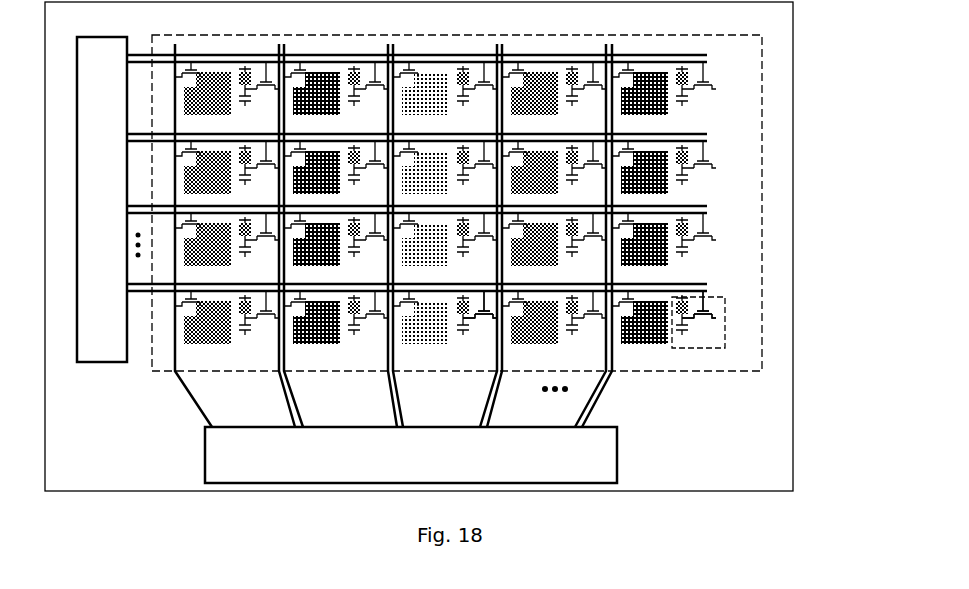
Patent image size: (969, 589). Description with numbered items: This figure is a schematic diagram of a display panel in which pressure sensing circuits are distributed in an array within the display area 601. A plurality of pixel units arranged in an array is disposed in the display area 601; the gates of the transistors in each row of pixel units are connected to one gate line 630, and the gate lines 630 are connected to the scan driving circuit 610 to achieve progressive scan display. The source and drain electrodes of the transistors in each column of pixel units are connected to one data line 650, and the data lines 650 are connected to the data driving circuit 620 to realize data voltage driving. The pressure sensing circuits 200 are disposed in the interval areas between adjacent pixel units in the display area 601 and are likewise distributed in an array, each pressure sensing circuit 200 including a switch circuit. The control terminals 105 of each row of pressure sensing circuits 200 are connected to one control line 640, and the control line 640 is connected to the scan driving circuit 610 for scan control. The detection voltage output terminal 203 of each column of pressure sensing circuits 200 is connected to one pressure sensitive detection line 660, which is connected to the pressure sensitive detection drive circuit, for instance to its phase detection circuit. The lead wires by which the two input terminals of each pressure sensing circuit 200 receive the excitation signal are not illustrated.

The scan driving circuit 610 is at (102, 199).
The data driving circuit 620 is at (411, 455).
The display area 601 is at (762, 83).
The gate line 630 is at (710, 138).
The control line 640 is at (708, 205).
The data line 650 is at (207, 407).
The pressure sensitive detection line 660 is at (487, 402).
The control terminal 105 is at (707, 296).
The pressure sensing circuit 200 is at (727, 306).
The detection voltage output terminal 203 is at (493, 322).